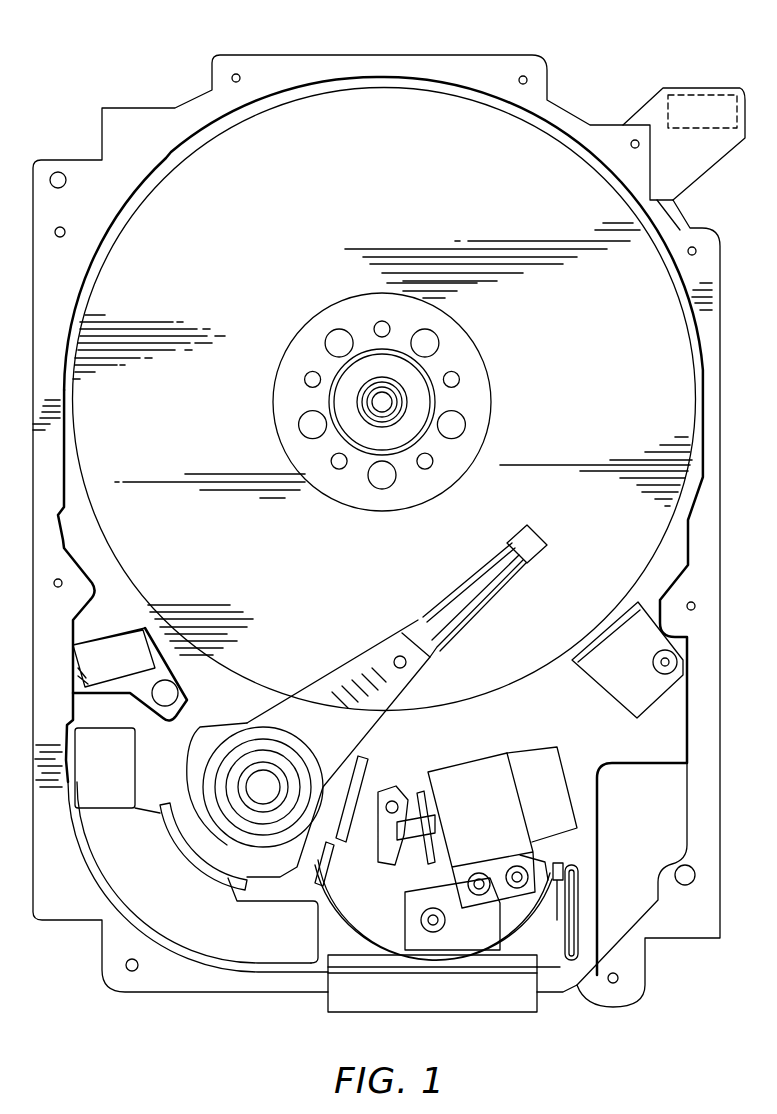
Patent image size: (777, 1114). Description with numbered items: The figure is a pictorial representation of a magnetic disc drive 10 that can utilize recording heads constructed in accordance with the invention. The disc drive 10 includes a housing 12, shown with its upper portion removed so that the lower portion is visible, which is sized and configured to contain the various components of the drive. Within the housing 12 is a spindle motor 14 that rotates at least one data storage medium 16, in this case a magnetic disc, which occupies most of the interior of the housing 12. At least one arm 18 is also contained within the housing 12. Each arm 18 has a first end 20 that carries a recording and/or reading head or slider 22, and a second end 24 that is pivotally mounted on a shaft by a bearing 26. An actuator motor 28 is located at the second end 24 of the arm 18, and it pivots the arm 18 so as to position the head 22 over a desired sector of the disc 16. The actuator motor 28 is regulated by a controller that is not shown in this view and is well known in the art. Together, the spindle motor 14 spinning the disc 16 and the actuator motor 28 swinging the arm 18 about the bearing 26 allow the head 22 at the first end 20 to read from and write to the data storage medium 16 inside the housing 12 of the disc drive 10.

The disc drive 10 is at (84, 98).
The housing 12 is at (502, 66).
The spindle motor 14 is at (376, 407).
The data storage medium 16 is at (304, 214).
The arm 18 is at (368, 676).
The first end 20 is at (476, 574).
The head 22 is at (532, 544).
The second end 24 is at (287, 727).
The bearing 26 is at (255, 775).
The actuator motor 28 is at (165, 895).